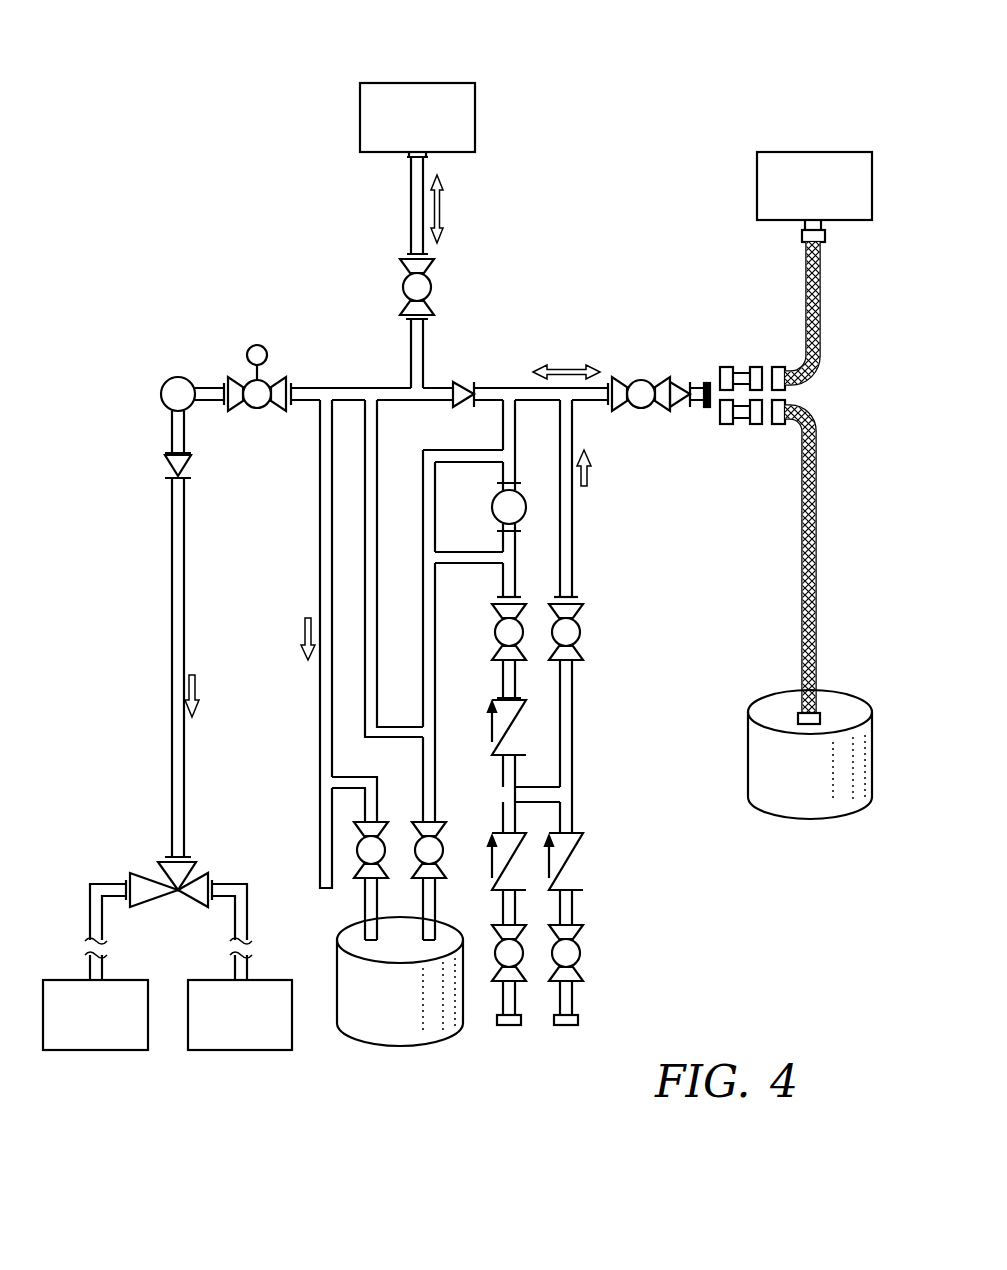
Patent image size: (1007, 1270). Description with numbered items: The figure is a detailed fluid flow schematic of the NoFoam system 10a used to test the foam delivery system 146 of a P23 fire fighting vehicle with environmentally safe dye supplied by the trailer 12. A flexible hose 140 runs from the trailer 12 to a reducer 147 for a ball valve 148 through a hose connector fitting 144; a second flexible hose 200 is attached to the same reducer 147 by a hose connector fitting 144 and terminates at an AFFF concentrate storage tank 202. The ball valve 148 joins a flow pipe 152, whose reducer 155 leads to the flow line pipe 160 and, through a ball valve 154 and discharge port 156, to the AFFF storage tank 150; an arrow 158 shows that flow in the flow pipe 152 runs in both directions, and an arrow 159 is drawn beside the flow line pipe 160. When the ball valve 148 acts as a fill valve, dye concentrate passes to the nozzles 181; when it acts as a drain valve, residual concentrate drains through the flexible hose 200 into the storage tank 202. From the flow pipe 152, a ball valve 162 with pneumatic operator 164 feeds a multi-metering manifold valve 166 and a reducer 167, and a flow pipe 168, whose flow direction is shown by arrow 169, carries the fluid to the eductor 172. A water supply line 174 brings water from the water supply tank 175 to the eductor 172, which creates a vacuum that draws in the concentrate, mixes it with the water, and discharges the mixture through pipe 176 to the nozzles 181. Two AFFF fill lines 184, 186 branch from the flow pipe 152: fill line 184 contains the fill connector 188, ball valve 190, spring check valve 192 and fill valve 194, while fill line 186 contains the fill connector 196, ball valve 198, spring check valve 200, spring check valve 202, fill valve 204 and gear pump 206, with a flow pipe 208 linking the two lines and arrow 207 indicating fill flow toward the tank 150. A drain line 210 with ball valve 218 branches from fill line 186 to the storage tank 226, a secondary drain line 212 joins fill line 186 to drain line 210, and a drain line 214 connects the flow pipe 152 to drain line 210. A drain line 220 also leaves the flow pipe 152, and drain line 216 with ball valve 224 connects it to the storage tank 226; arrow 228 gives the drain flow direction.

The foam proportioning system 10a is at (609, 174).
The trailer 12 is at (797, 160).
The flexible hose 140 is at (806, 283).
The hose connector fitting 144 is at (740, 424).
The foam delivery system 146 is at (184, 270).
The reducer 147 is at (680, 408).
The ball valve 148 is at (641, 381).
The storage tank 150 is at (358, 118).
The flow pipe 152 is at (315, 388).
The ball valve 154 is at (428, 292).
The reducer 155 is at (461, 382).
The discharge port 156 is at (411, 165).
The arrow 158 is at (568, 366).
The flow direction 159 is at (442, 213).
The flow line pipe 160 is at (411, 240).
The ball valve 162 is at (262, 405).
The pneumatic operator 164 is at (256, 345).
The multi-metering manifold valve 166 is at (162, 400).
The reducer 167 is at (165, 464).
The flow pipe 168 is at (172, 752).
The arrow 169 is at (198, 690).
The eductor 172 is at (166, 895).
The water supply line 174 is at (240, 884).
The water supply tank 175 is at (236, 1050).
The pipe 176 is at (94, 884).
The nozzles 181 is at (92, 1050).
The AFFF fill line 184 is at (572, 550).
The AFFF fill line 186 is at (503, 432).
The AFFF fill connector 188 is at (567, 1025).
The ball valve 190 is at (580, 953).
The spring check valve 192 is at (582, 852).
The ball valve/fill valve 194 is at (580, 632).
The AFFF fill connector 196 is at (510, 1025).
The ball valve 198 is at (496, 953).
The flexible hose / spring check valve 200 is at (803, 523).
The AFFF concentrate storage tank / spring check valve 202 is at (760, 755).
The ball valve/fill valve 204 is at (496, 632).
The gear pump 206 is at (523, 511).
The arrow 207 is at (590, 475).
The flow pipe 208 is at (540, 787).
The AFFF drain line 210 is at (423, 488).
The secondary AFFF drain line 212 is at (457, 551).
The AFFF drain line 214 is at (365, 526).
The AFFF drain line 216 is at (355, 775).
The ball valve 218 is at (443, 846).
The AFFF drain line 220 is at (320, 555).
The ball valve 224 is at (358, 852).
The AFFF concentrate storage tank 226 is at (342, 945).
The arrow 228 is at (302, 627).